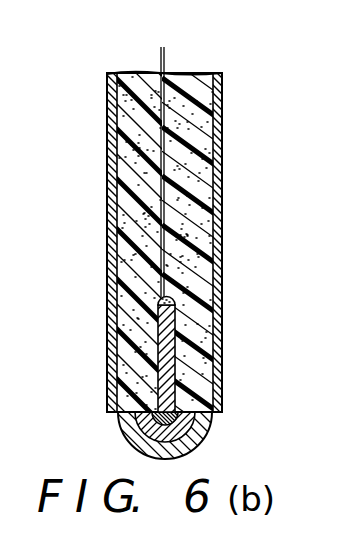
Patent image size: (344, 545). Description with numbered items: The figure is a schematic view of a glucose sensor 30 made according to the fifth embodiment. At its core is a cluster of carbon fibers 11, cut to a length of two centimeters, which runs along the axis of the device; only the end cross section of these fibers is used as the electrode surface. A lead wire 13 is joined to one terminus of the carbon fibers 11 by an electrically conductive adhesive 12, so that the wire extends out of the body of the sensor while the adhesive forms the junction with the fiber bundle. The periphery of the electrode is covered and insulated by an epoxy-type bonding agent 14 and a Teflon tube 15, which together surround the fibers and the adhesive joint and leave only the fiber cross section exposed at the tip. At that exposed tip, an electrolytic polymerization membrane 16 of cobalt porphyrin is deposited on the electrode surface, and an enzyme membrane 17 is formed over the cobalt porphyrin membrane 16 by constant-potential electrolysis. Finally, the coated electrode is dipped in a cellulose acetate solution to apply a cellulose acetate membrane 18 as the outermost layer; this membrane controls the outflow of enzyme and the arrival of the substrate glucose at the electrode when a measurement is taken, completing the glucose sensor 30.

The glucose sensor 30 is at (103, 225).
The carbon fibers 11 is at (176, 343).
The electrically conductive adhesive 12 is at (160, 294).
The lead wire 13 is at (108, 112).
The epoxy-type bonding agent 14 is at (110, 240).
The Teflon tube 15 is at (222, 233).
The electrolytic polymerization membrane 16 is at (185, 414).
The enzyme membrane 17 is at (150, 422).
The cellulose acetate membrane 18 is at (132, 443).